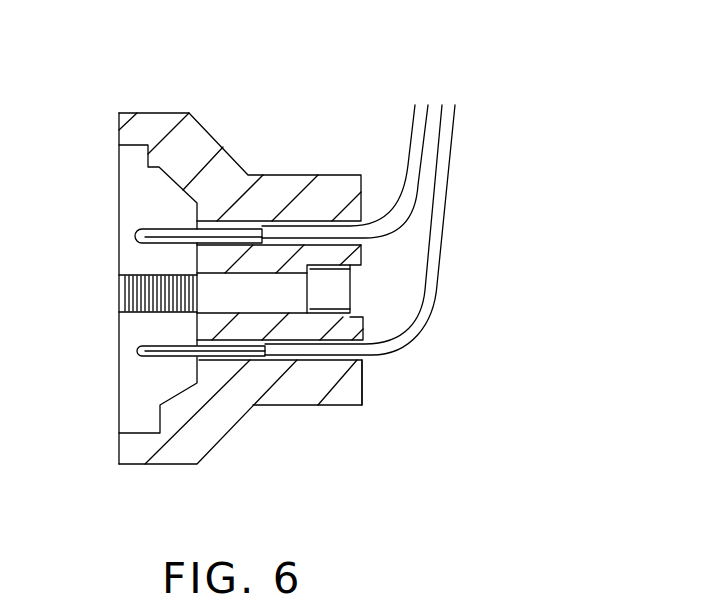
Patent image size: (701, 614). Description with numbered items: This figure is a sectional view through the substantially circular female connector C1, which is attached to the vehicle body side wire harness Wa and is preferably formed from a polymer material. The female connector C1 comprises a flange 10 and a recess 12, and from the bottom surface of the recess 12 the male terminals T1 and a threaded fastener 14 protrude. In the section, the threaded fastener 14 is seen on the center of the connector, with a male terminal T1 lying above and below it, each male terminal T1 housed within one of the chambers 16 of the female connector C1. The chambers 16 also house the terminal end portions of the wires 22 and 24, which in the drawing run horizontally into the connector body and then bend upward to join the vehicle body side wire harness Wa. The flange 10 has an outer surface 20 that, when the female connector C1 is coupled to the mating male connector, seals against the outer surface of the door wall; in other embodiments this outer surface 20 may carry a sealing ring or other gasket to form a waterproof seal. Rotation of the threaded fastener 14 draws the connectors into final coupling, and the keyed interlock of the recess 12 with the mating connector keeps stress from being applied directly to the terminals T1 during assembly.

The flange 10 is at (152, 445).
The recess 12 is at (138, 385).
The threaded fastener 14 is at (123, 297).
The chambers 16 is at (372, 358).
The outer surface 20 is at (119, 132).
The wire 22 is at (436, 282).
The wire 24 is at (411, 151).
The male terminal T1 is at (135, 234).
The female connector C1 is at (293, 63).
The vehicle body side wire harness Wa is at (452, 129).